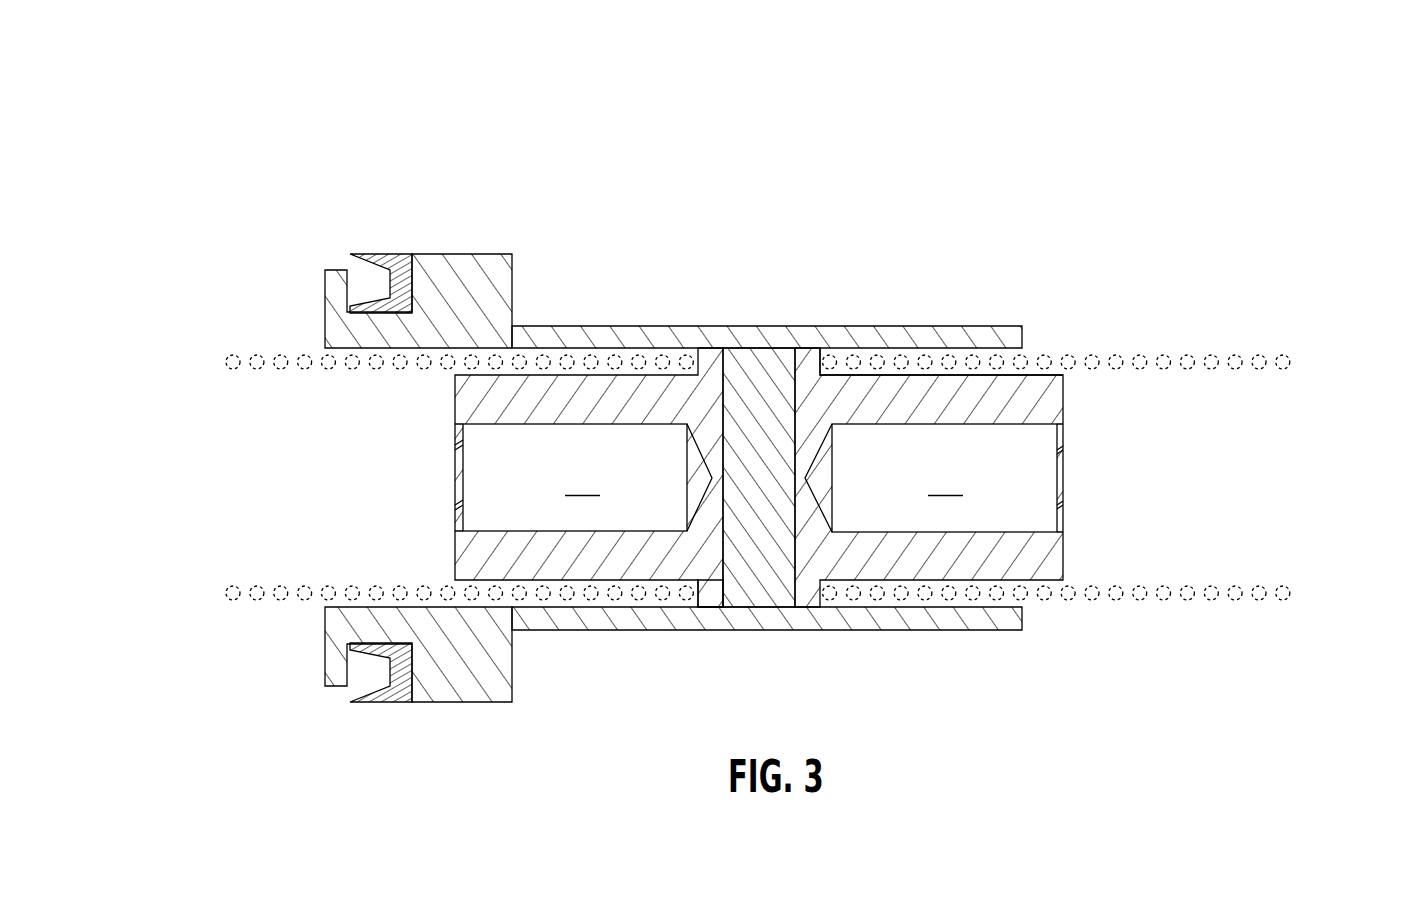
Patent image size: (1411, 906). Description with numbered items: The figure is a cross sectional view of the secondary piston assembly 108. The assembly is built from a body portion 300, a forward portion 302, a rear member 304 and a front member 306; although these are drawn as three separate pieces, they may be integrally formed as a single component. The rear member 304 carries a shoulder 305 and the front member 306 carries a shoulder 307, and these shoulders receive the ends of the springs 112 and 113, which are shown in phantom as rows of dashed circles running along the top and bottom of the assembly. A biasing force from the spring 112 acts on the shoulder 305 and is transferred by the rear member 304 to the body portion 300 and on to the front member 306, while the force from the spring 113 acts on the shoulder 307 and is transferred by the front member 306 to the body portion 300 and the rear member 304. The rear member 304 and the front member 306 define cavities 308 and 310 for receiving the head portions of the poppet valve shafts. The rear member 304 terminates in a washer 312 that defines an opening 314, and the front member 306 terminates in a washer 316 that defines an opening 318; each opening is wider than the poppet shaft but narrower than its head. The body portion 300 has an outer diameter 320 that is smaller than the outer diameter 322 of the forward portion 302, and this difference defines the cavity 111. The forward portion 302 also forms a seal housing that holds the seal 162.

The secondary piston assembly 108 is at (262, 182).
The cavity 111 is at (797, 684).
The spring 112 is at (1285, 357).
The spring 113 is at (226, 362).
The seal 162 is at (392, 254).
The body portion 300 is at (623, 326).
The forward portion 302 is at (475, 254).
The rear member 304 is at (1001, 477).
The shoulder 305 is at (826, 353).
The front member 306 is at (530, 517).
The shoulder 307 is at (694, 598).
The cavity 308 is at (931, 478).
The cavity 310 is at (587, 477).
The washer 312 is at (1063, 437).
The opening 314 is at (1063, 480).
The washer 316 is at (455, 442).
The opening 318 is at (455, 483).
The outer diameter 320 is at (733, 326).
The outer diameter 322 is at (458, 702).